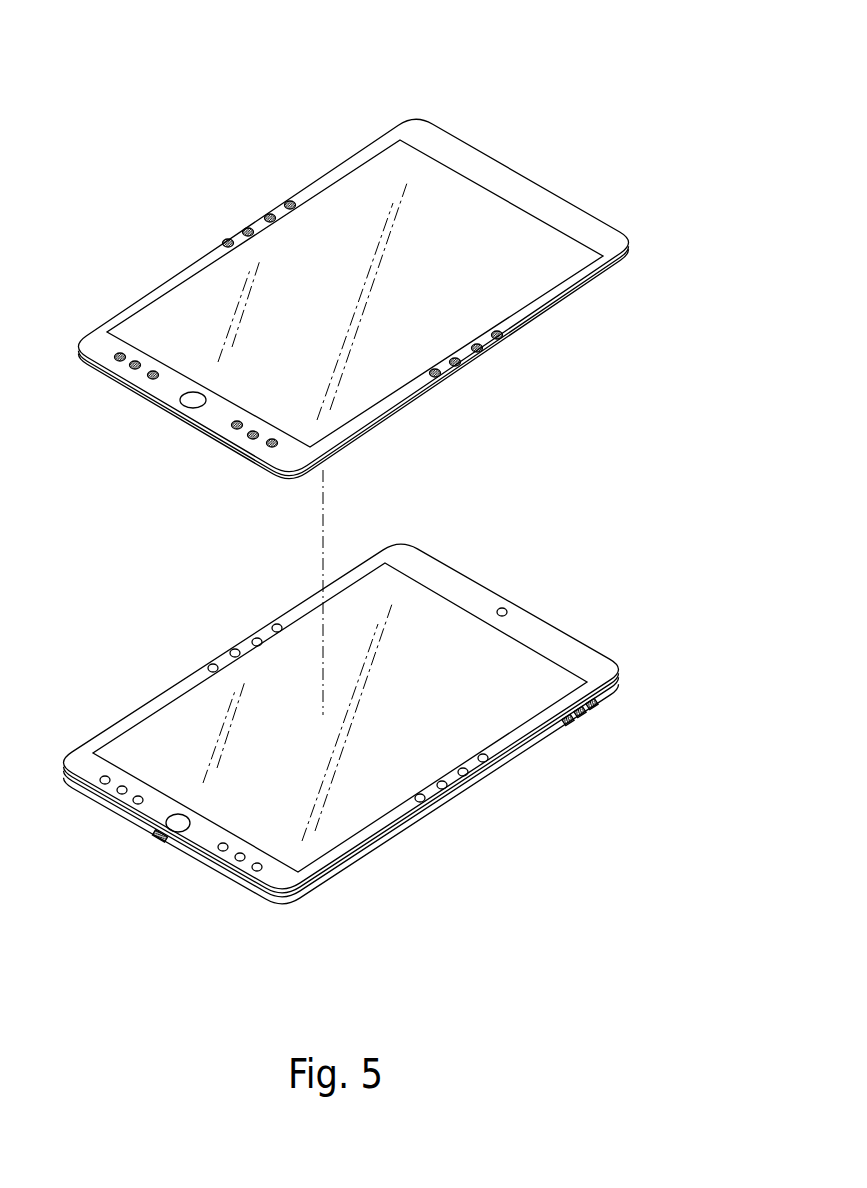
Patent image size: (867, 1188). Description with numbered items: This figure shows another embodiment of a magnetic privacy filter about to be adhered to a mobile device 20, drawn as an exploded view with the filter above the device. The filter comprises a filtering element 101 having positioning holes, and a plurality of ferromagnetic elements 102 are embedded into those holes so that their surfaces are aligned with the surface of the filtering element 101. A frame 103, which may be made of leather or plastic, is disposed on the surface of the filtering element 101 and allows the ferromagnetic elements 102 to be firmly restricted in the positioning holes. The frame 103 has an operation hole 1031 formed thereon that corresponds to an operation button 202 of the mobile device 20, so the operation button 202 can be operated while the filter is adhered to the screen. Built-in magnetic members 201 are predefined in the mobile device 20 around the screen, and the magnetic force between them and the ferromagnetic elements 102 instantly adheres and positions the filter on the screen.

The mobile device 20 is at (390, 746).
The filtering element 101 is at (522, 230).
The ferromagnetic elements 102 is at (222, 242).
The frame 103 is at (478, 163).
The operation hole 1031 is at (190, 407).
The built-in magnetic members 201 is at (427, 802).
The operation button 202 is at (157, 836).